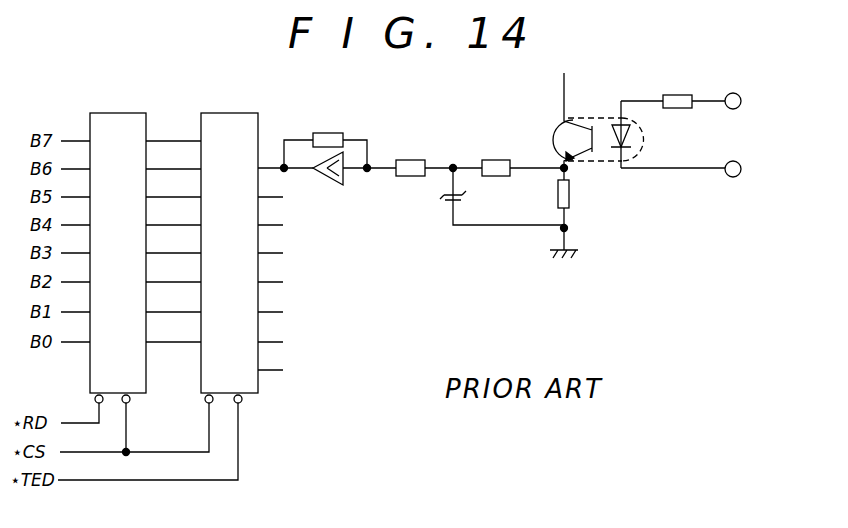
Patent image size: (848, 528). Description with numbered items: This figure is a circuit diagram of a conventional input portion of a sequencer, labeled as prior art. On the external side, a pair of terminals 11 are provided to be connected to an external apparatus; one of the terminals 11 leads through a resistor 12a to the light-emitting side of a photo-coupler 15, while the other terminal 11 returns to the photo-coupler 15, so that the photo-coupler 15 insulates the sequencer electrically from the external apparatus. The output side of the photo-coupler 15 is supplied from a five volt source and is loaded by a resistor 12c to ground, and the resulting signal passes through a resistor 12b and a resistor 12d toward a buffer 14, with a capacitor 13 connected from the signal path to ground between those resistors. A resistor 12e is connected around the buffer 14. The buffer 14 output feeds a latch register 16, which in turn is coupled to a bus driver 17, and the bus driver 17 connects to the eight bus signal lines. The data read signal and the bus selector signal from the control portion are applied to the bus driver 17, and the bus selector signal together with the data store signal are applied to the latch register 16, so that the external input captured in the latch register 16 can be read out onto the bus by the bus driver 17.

The bus driver 17 is at (130, 118).
The latch register 16 is at (237, 119).
The buffer 14 is at (333, 178).
The resistor 12e is at (330, 134).
The resistor 12d is at (418, 160).
The capacitor 13 is at (446, 200).
The resistor 12b is at (500, 160).
The resistor 12c is at (569, 196).
The photo-coupler 15 is at (644, 138).
The resistor 12a is at (676, 95).
The terminals 11 is at (741, 101).